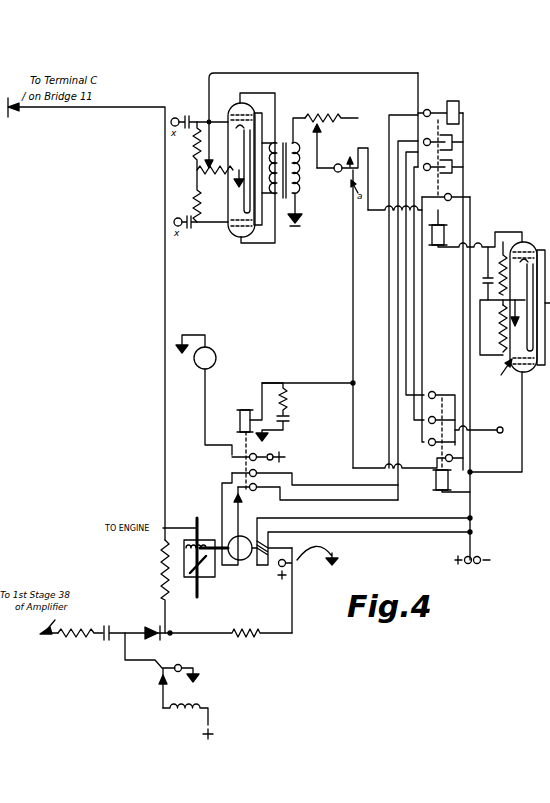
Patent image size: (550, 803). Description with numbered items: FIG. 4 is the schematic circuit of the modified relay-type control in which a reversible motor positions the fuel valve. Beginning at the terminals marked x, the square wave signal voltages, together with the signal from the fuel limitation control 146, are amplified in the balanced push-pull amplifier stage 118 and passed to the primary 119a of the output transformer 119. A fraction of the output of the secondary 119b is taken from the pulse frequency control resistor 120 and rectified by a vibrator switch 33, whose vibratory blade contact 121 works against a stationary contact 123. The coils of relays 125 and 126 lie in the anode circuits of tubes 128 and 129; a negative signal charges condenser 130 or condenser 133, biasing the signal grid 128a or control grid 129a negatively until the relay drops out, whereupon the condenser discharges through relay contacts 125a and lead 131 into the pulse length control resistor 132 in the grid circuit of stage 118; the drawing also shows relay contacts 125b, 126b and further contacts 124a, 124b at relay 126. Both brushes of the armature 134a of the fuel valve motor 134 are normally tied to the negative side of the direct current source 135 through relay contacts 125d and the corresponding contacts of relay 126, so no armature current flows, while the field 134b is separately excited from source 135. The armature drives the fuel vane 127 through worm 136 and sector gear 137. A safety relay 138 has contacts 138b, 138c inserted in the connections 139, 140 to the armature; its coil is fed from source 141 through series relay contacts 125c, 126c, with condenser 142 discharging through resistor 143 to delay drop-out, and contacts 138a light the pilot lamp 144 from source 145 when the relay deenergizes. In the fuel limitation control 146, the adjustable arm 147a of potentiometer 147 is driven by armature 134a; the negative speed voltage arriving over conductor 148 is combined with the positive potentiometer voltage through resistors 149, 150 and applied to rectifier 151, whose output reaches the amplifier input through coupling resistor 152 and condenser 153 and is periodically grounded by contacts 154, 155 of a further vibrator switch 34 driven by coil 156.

The switch contact 33 is at (343, 152).
The amplifier input connection 34 is at (137, 679).
The balanced push-pull amplifier stage 118 is at (236, 104).
The output transformer 119 is at (297, 173).
The primary 119a is at (273, 168).
The transformer secondary 119b is at (299, 183).
The pulse frequency control resistor 120 is at (331, 133).
The vibratory blade contact 121 is at (333, 173).
The stationary contact 123 is at (350, 158).
The relay contact 124a is at (456, 392).
The relay contact 124b is at (408, 456).
The relay 125 is at (444, 250).
The relay contacts 125a is at (465, 196).
The relay contact 125b is at (457, 167).
The relay contacts 125c is at (457, 143).
The relay contacts 125d is at (462, 110).
The relay 126 is at (436, 484).
The relay contact 126b is at (470, 426).
The relay contacts 126c is at (448, 416).
The fuel vane 127 is at (200, 580).
The tube 128 is at (521, 263).
The signal grid 128a is at (512, 256).
The tube 129 is at (524, 374).
The control grid 129a is at (500, 371).
The condenser 130 is at (487, 279).
The lead 131 is at (313, 90).
The pulse length control resistor 132 is at (220, 169).
The condenser 133 is at (490, 330).
The fuel valve motor 134 is at (244, 563).
The armature 134a is at (243, 538).
The field 134b is at (270, 548).
The direct current source of power 135 is at (478, 556).
The worm 136 is at (202, 557).
The sector gear 137 is at (210, 565).
The safety relay 138 is at (246, 398).
The relay contacts 138a is at (259, 451).
The relay contact 138b is at (315, 474).
The relay contact 138c is at (318, 489).
The connection 139 is at (389, 300).
The connection 140 is at (398, 318).
The source 141 is at (500, 434).
The condenser 142 is at (292, 422).
The resistor 143 is at (290, 400).
The pilot lamp 144 is at (209, 395).
The source 145 is at (286, 457).
The fuel limitation control 146 is at (254, 668).
The potentiometer 147 is at (299, 565).
The adjustable arm 147a is at (296, 573).
The conductor 148 is at (153, 463).
The resistor 149 is at (163, 573).
The resistor 150 is at (231, 626).
The rectifier 151 is at (152, 625).
The coupling resistor 152 is at (80, 626).
The condenser 153 is at (119, 641).
The contact 154 is at (150, 670).
The contact 155 is at (187, 668).
The coil 156 is at (188, 721).